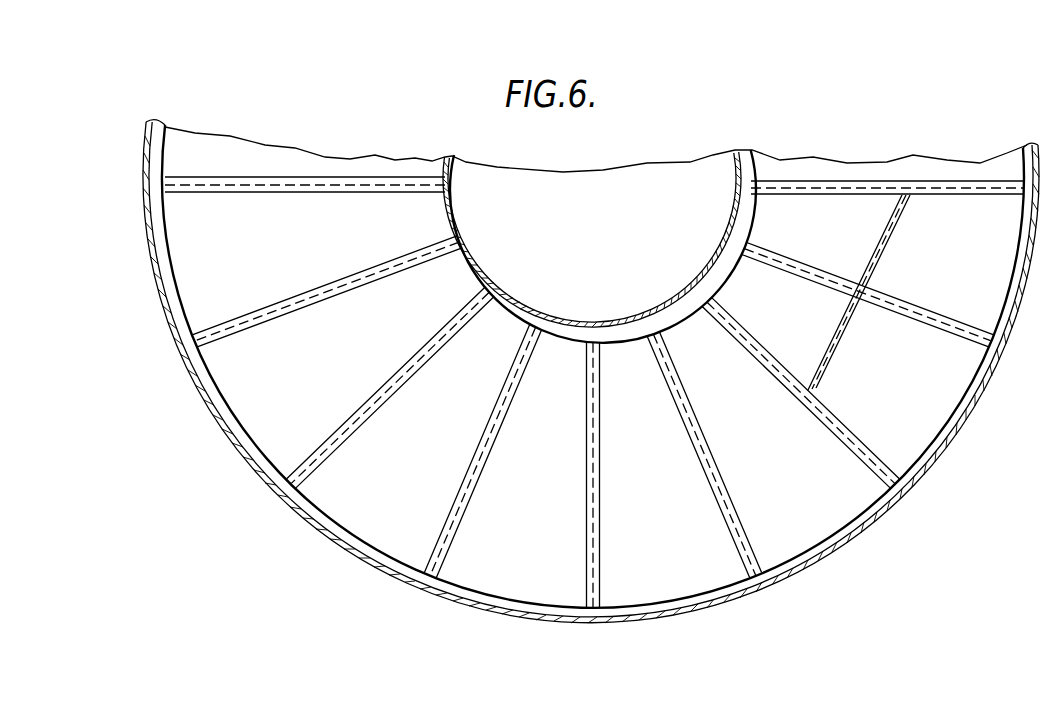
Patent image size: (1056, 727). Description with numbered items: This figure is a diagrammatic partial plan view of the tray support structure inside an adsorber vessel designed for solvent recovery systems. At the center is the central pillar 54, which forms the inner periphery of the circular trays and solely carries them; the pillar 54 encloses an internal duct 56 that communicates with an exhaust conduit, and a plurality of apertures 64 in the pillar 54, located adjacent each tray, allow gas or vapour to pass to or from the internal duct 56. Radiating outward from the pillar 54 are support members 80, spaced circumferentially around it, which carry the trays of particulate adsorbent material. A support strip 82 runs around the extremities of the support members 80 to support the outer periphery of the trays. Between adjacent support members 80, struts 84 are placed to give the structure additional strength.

The central pillar 54 is at (648, 324).
The internal duct 56 is at (667, 199).
The apertures 64 is at (468, 278).
The support members 80 is at (427, 347).
The support strip 82 is at (850, 532).
The struts 84 is at (888, 283).